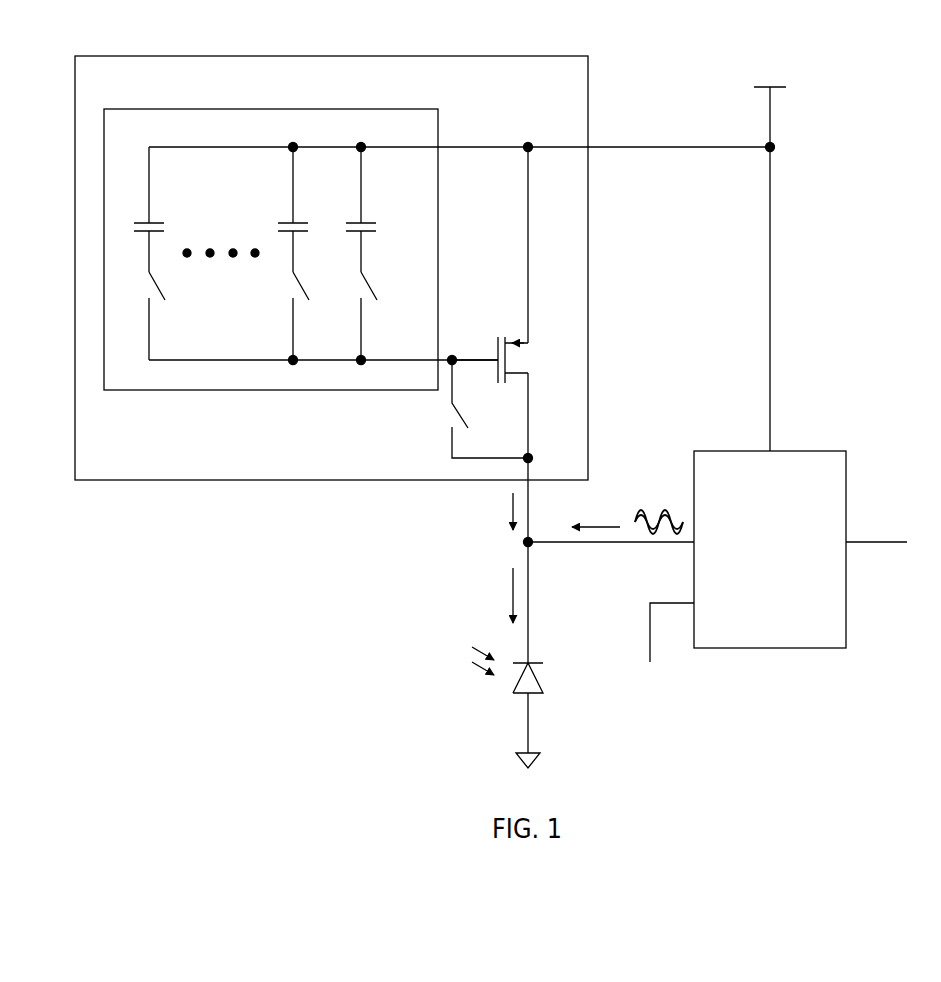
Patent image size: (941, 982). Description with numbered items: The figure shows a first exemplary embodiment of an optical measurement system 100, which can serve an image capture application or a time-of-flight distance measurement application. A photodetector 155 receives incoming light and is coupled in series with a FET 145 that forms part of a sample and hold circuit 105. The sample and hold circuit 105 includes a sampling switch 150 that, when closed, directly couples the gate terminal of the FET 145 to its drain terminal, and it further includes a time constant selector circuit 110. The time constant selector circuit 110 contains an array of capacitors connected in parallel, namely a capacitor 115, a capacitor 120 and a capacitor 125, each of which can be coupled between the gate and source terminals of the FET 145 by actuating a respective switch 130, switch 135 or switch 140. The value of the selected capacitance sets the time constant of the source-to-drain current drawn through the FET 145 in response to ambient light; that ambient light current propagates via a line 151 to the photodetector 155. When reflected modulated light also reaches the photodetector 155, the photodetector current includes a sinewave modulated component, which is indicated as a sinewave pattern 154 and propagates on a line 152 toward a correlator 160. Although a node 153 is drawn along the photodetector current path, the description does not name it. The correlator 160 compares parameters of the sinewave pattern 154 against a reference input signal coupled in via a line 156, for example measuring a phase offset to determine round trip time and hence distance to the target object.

The optical measurement system 100 is at (856, 210).
The sample and hold circuit 105 is at (331, 268).
The time constant selector circuit 110 is at (439, 249).
The capacitor 115 is at (176, 224).
The capacitor 120 is at (320, 224).
The capacitor 125 is at (387, 224).
The switch 130 is at (176, 287).
The switch 135 is at (322, 287).
The switch 140 is at (389, 287).
The FET 145 is at (550, 352).
The sampling switch 150 is at (433, 425).
The line 151 is at (528, 522).
The line 152 is at (558, 542).
The photodiode current path 153 is at (528, 580).
The sinewave pattern 154 is at (656, 503).
The photodetector 155 is at (556, 681).
The line 156 is at (650, 632).
The correlator 160 is at (800, 451).